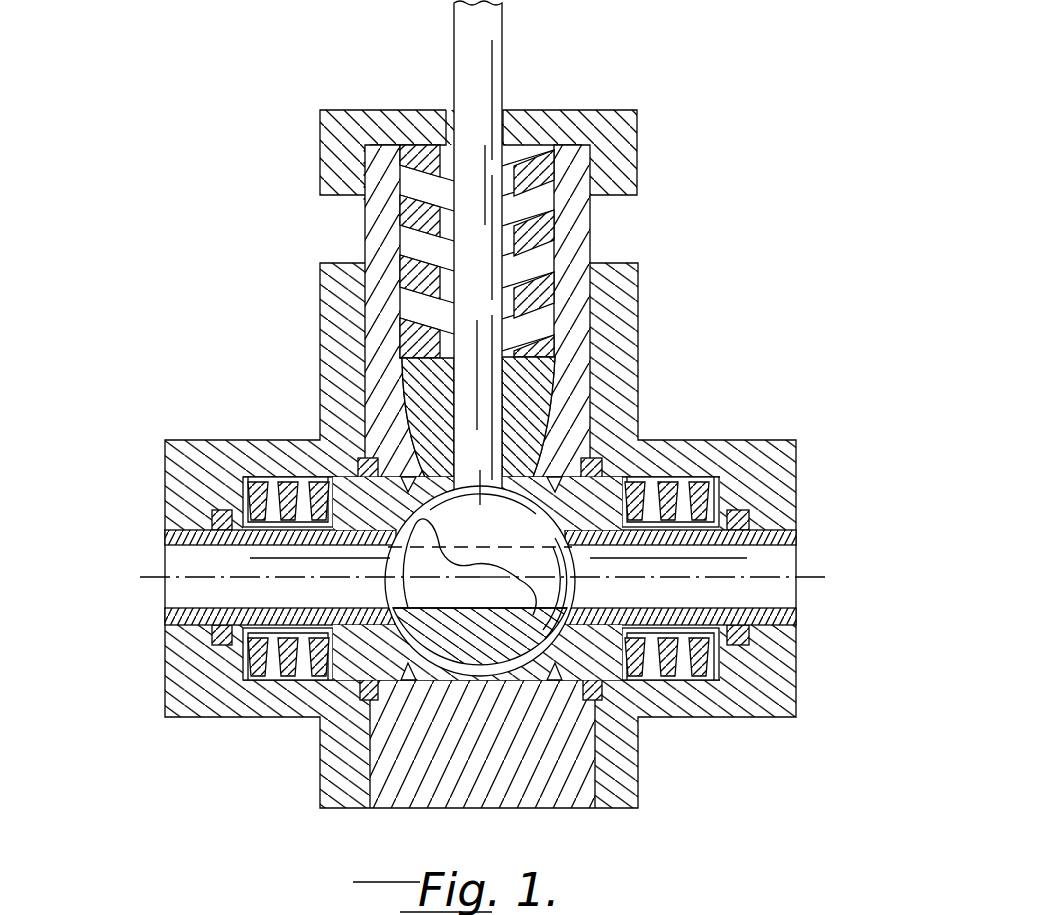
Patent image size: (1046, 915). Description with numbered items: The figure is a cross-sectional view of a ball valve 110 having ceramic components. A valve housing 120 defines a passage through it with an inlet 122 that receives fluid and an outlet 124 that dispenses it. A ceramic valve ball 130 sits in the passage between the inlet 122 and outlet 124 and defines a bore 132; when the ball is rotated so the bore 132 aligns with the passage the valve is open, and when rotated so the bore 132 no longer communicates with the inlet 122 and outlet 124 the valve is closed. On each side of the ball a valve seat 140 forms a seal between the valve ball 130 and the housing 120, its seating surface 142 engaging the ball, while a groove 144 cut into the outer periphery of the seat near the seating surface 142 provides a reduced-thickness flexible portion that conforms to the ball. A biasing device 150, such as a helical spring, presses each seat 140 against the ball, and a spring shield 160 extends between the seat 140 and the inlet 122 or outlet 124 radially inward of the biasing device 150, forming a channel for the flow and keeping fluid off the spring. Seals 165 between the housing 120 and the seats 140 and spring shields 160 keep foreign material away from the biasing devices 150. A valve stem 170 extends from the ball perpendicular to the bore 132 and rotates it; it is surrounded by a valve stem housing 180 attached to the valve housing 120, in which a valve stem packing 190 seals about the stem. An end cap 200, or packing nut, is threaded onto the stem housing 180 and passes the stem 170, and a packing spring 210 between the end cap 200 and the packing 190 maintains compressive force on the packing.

The ball valve 110 is at (472, 423).
The valve housing 120 is at (332, 301).
The inlet 122 is at (160, 556).
The outlet 124 is at (803, 553).
The valve ball 130 is at (510, 535).
The bore 132 is at (396, 575).
The valve seat 140 is at (378, 645).
The seating surface 142 is at (469, 567).
The groove 144 is at (405, 478).
The biasing device 150 is at (262, 660).
The spring shield 160 is at (196, 607).
The seals 165 is at (221, 510).
The valve stem 170 is at (466, 40).
The valve stem housing 180 is at (378, 237).
The valve stem packing 190 is at (540, 373).
The end cap 200 is at (600, 117).
The packing spring 210 is at (554, 242).